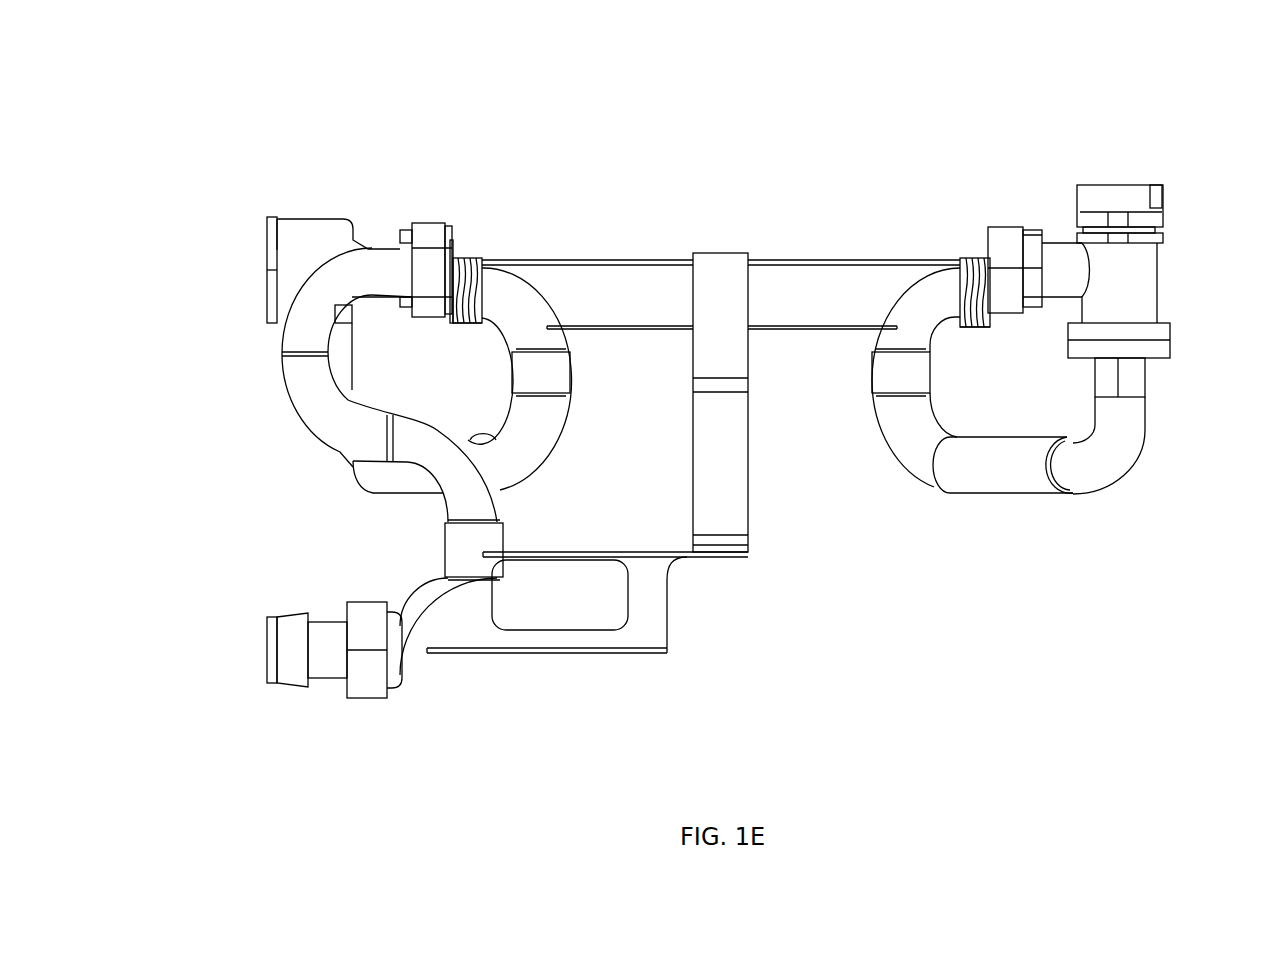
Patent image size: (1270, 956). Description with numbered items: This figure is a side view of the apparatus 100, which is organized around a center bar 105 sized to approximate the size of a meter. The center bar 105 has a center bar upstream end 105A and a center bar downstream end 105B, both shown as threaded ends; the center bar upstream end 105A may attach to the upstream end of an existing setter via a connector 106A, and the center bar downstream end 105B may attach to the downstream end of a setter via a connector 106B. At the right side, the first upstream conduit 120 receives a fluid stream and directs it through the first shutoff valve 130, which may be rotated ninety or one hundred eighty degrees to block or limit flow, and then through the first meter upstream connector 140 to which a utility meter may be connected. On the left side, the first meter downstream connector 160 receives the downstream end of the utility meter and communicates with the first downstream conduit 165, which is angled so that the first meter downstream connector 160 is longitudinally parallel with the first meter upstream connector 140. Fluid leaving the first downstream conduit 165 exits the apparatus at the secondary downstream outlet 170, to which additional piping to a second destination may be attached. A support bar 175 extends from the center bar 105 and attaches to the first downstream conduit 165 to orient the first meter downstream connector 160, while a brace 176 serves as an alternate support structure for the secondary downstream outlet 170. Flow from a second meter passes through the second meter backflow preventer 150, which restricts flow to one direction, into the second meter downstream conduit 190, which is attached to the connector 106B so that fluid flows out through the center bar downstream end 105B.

The apparatus 100 is at (578, 118).
The center bar 105 is at (822, 262).
The center bar upstream end 105A is at (975, 258).
The center bar downstream end 105B is at (474, 258).
The connector 106A is at (975, 338).
The connector 106B is at (466, 334).
The first upstream conduit 120 is at (1005, 495).
The first shutoff valve 130 is at (1162, 195).
The first meter upstream connector 140 is at (1008, 230).
The second meter backflow preventer 150 is at (292, 218).
The first meter downstream connector 160 is at (431, 222).
The first downstream conduit 165 is at (285, 380).
The secondary downstream outlet 170 is at (268, 640).
The support bar 175 is at (727, 560).
The brace 176 is at (598, 655).
The second meter downstream conduit 190 is at (543, 470).